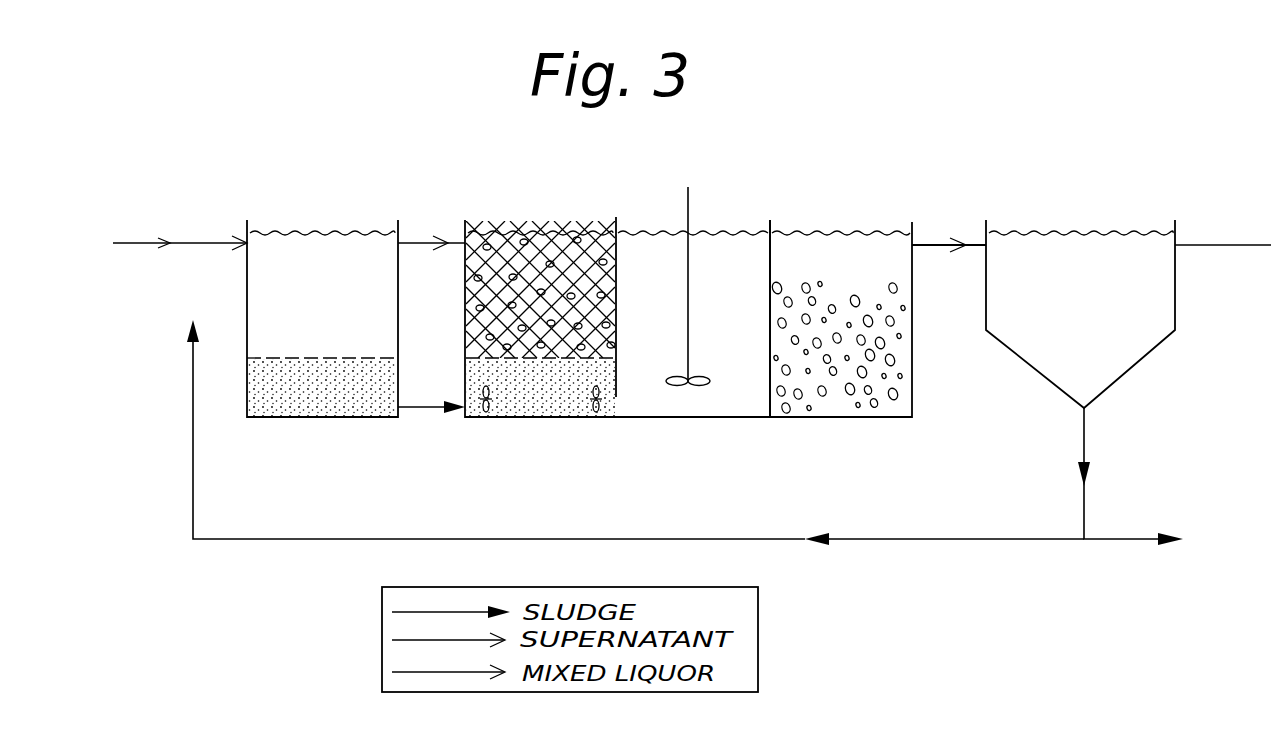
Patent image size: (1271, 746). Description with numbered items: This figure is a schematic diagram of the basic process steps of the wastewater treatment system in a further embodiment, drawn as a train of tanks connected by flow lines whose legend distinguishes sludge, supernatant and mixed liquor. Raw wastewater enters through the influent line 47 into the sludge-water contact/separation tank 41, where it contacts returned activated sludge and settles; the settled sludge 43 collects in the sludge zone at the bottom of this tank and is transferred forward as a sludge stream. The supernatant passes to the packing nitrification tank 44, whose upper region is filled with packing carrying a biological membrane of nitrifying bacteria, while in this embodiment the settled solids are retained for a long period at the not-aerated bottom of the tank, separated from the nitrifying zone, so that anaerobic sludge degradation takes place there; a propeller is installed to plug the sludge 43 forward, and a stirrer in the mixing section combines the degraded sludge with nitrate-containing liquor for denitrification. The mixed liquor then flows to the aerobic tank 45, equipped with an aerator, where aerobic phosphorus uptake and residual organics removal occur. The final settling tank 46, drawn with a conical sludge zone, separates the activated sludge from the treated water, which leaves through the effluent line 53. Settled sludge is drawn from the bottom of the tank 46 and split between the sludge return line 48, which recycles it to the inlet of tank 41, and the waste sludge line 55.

The first settling tank 41 is at (338, 312).
The settled sludge 43 is at (338, 405).
The contact/mixing tank 44 is at (750, 330).
The aeration tank 45 is at (868, 287).
The clarifier 46 is at (1100, 301).
The influent line 47 is at (113, 243).
The sludge recycle line 48 is at (683, 539).
The effluent line 53 is at (1210, 245).
The waste sludge line 55 is at (1153, 520).